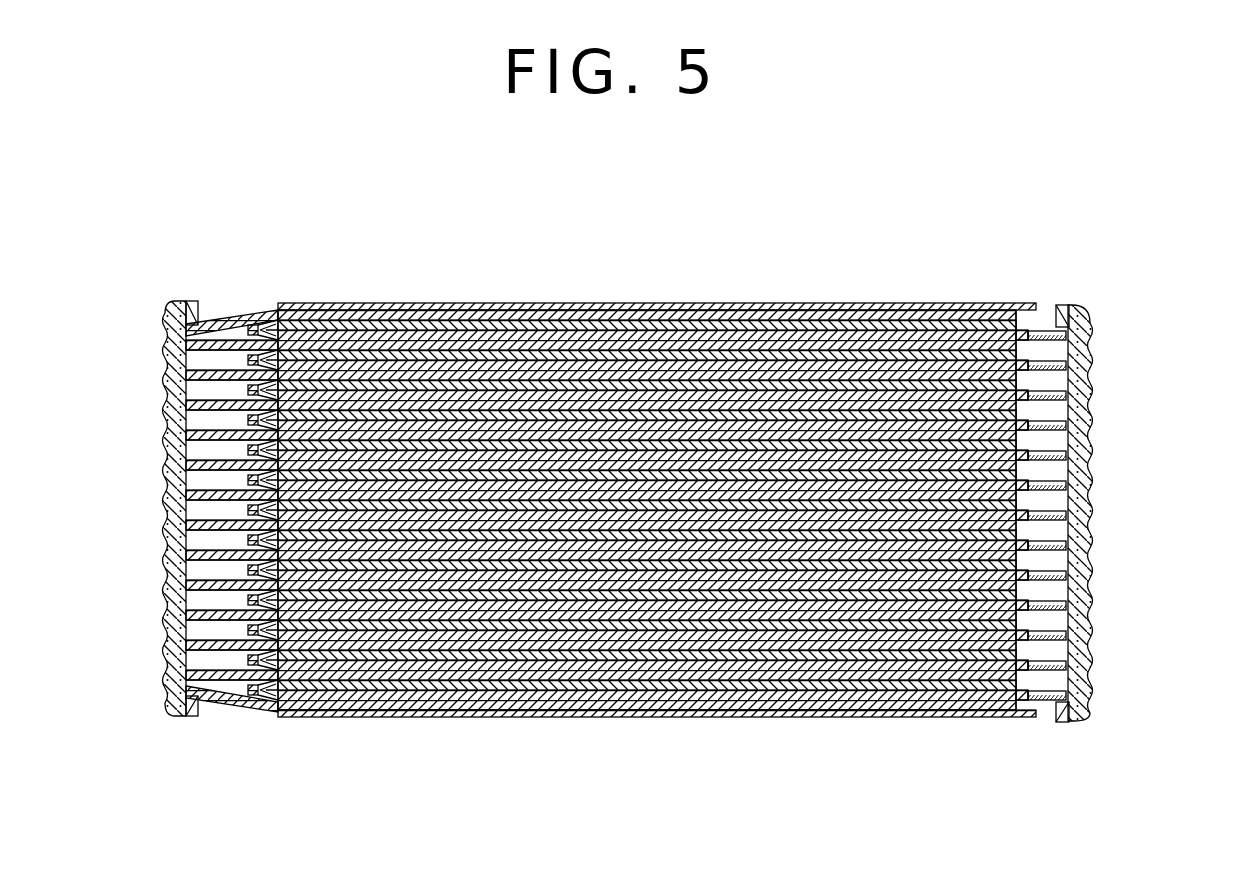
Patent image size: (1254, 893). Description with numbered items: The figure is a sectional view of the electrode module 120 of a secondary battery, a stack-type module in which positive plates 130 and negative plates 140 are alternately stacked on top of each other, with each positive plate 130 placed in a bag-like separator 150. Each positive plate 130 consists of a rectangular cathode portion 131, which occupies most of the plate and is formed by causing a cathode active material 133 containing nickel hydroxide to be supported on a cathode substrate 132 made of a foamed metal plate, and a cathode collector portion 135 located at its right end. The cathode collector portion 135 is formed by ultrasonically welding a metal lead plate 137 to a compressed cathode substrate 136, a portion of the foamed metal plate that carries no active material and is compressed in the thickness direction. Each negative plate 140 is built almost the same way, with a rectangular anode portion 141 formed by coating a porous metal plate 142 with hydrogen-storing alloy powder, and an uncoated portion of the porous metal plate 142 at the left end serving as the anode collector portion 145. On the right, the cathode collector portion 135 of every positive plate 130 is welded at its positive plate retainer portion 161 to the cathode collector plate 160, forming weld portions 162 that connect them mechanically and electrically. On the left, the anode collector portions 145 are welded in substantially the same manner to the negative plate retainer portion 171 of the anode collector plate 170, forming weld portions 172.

The electrode module 120 is at (770, 253).
The positive plate 130 is at (897, 327).
The cathode portion 131 is at (927, 710).
The cathode substrate 132 is at (687, 710).
The cathode active material 133 is at (232, 515).
The cathode collector portion 135 is at (1168, 220).
The compressed cathode substrate 136 is at (1095, 333).
The metal lead plate 137 is at (1037, 320).
The negative plate 140 is at (372, 207).
The anode portion 141 is at (313, 340).
The porous metal plate 142 is at (452, 338).
The anode collector portion 145 is at (212, 340).
The bag-like separator 150 is at (677, 297).
The cathode collector plate 160 is at (1058, 717).
The positive plate retainer portion 161 is at (1062, 712).
The weld portion 162 is at (1083, 470).
The anode collector plate 170 is at (193, 707).
The negative plate retainer portion 171 is at (192, 706).
The weld portion 172 is at (157, 440).